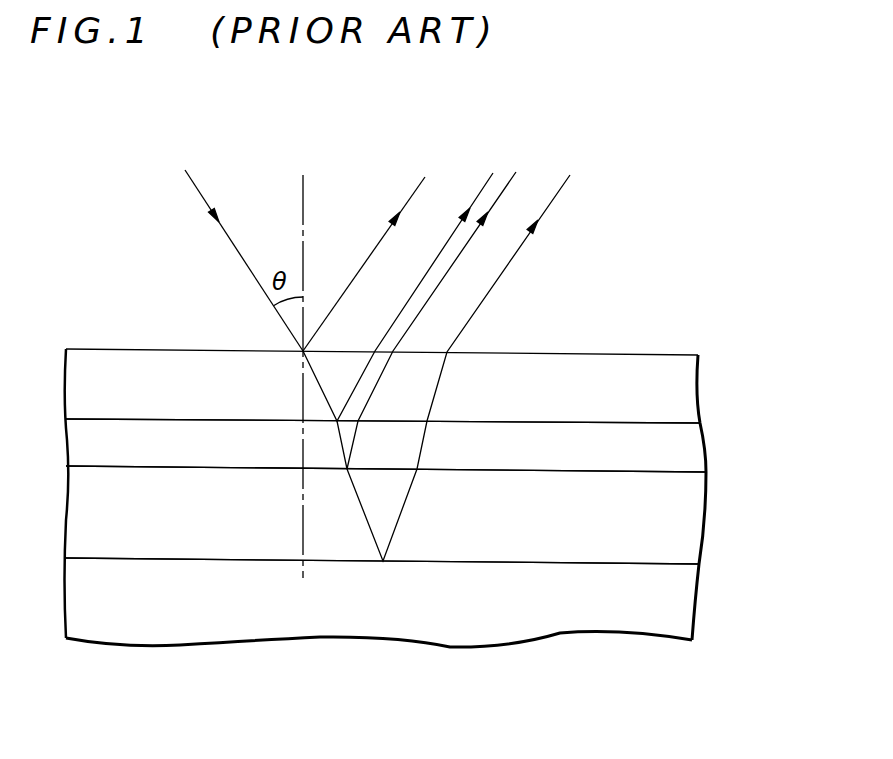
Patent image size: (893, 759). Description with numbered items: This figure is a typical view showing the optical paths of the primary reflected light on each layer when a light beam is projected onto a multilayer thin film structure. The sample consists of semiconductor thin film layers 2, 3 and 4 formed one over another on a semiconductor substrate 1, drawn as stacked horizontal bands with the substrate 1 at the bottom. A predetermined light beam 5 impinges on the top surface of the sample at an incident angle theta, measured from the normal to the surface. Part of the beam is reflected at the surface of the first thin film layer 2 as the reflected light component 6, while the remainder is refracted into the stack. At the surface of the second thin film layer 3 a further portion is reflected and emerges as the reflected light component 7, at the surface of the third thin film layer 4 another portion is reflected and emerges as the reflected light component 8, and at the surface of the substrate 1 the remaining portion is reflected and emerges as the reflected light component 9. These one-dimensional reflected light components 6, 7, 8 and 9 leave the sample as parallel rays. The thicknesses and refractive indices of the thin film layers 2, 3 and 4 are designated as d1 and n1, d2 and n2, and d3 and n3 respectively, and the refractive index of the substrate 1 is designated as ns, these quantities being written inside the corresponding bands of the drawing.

The semiconductor substrate 1 is at (675, 613).
The semiconductor thin film layer 2 is at (663, 401).
The semiconductor thin film layer 3 is at (672, 458).
The semiconductor thin film layer 4 is at (667, 533).
The light beam 5 is at (235, 243).
The reflected light component 6 is at (367, 246).
The reflected light component 7 is at (400, 281).
The reflected light component 8 is at (432, 305).
The reflected light component 9 is at (463, 351).